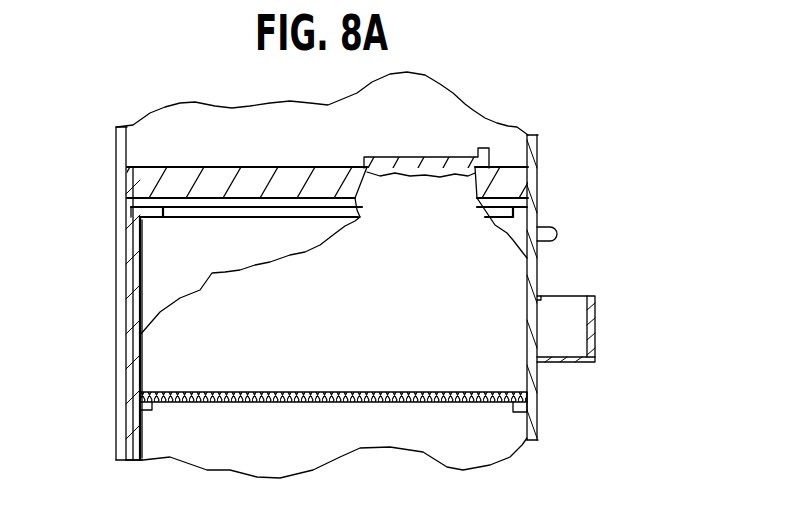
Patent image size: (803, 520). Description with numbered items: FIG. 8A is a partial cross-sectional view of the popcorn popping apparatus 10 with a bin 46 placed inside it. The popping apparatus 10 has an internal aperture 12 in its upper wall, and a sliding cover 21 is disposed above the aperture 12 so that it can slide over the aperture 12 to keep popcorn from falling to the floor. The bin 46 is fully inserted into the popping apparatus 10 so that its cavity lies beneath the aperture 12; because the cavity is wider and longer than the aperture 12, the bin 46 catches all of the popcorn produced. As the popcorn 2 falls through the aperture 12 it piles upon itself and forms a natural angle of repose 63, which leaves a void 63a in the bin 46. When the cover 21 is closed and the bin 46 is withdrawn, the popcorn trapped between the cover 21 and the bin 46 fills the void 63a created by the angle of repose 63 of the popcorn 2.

The popcorn popping apparatus 10 is at (566, 172).
The internal aperture 12 is at (383, 167).
The sliding cover 21 is at (413, 158).
The bin 46 is at (592, 256).
The natural angle of repose 63 is at (205, 270).
The void 63a is at (227, 257).
The popcorn 2 is at (355, 310).